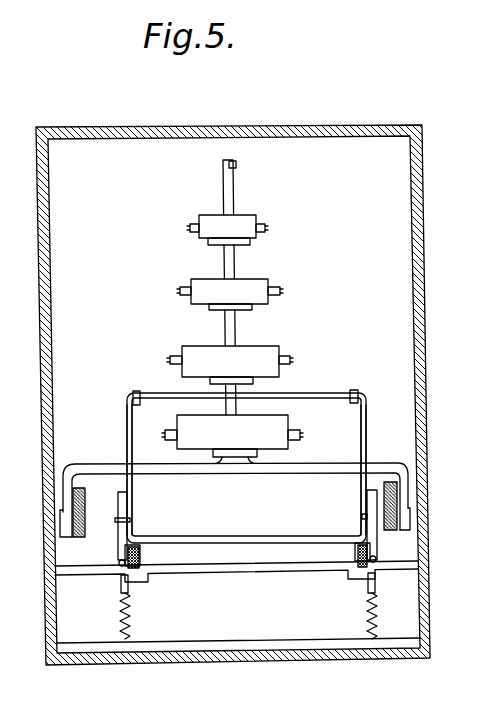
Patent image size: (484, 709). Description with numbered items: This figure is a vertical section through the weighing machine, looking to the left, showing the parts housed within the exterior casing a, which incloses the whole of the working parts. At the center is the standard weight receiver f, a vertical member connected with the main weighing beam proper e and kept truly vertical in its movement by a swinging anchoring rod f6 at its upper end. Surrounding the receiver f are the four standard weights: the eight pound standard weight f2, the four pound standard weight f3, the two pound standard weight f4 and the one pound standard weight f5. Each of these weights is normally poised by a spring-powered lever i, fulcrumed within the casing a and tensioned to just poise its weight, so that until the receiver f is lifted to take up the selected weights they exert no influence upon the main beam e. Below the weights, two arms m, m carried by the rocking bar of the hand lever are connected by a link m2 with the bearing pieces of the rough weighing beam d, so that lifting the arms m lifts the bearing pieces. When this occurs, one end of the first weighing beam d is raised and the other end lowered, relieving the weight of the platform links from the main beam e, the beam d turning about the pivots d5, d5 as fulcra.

The exterior casing a is at (410, 193).
The standard weight receiver f is at (228, 257).
The eight pound standard weight f2 is at (188, 425).
The four pound standard weight f3 is at (243, 353).
The two pound standard weight f4 is at (248, 290).
The one pound standard weight f5 is at (240, 222).
The anchoring rod f6 is at (236, 164).
The lever i is at (190, 230).
The arms m is at (137, 395).
The link m2 is at (367, 440).
The weighing beam proper e is at (85, 512).
The rough weighing beam d is at (138, 560).
The pivots d5 is at (130, 608).